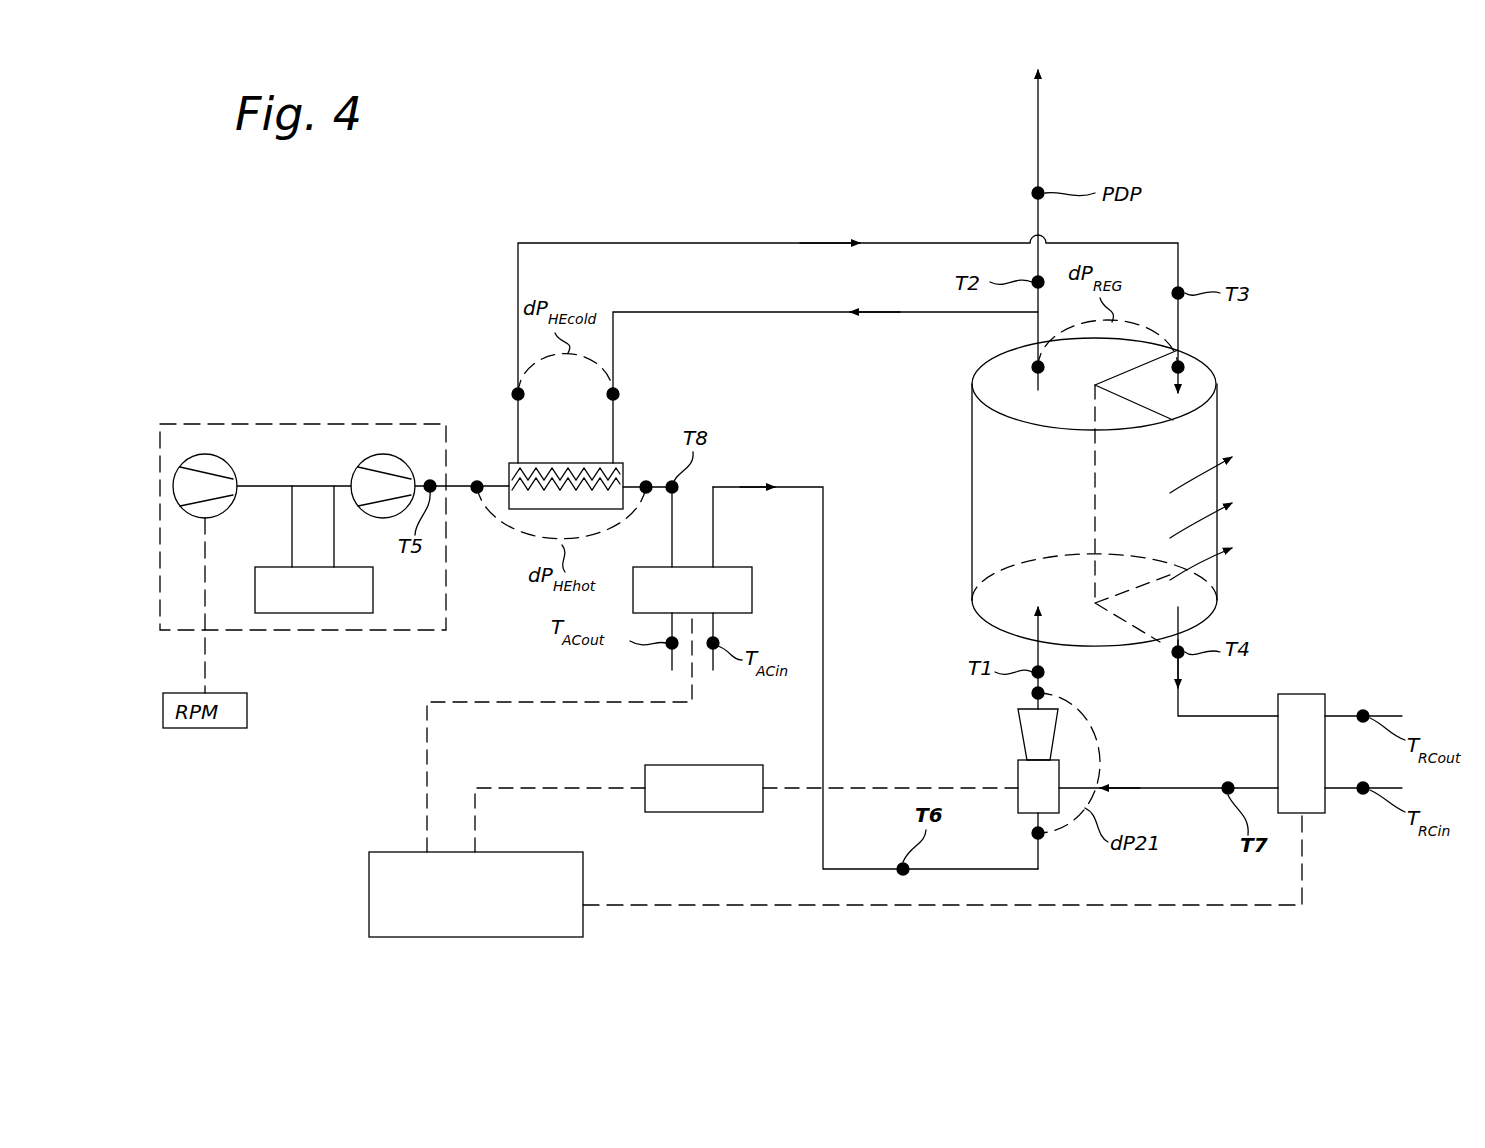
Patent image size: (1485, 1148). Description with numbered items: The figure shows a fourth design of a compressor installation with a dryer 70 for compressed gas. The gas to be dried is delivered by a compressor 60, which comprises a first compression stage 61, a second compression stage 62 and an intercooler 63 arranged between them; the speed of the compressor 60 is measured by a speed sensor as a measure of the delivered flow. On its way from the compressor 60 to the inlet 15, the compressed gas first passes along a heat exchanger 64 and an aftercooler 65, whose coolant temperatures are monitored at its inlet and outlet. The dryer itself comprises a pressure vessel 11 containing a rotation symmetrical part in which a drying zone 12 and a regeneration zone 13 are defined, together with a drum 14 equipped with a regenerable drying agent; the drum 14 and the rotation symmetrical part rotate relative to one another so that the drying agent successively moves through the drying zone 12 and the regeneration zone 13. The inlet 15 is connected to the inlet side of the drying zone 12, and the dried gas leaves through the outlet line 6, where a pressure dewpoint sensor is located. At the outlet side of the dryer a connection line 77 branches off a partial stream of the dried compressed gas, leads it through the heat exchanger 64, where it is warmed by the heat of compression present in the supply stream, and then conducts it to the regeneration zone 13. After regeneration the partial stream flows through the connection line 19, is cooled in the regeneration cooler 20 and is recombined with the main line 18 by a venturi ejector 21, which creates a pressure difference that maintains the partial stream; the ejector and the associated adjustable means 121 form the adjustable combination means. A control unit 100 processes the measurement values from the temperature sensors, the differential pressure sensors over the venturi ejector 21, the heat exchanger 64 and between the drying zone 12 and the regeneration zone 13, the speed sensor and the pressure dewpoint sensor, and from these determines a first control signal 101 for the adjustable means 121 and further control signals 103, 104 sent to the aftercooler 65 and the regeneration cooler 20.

The outlet line 6 is at (1038, 143).
The pressure vessel 11 is at (1250, 225).
The drying zone 12 is at (1003, 487).
The regeneration zone 13 is at (1203, 438).
The drum 14 is at (1215, 368).
The inlet 15 is at (1038, 653).
The main line 18 is at (823, 738).
The connection line 19 is at (1243, 716).
The regeneration cooler 20 is at (1315, 700).
The venturi ejector 21 is at (1025, 778).
The compressor 60 is at (294, 437).
The first compression stage 61 is at (183, 485).
The second compression stage 62 is at (380, 455).
The intercooler 63 is at (275, 613).
The heat exchanger 64 is at (530, 502).
The aftercooler 65 is at (752, 590).
The dryer 70 is at (437, 272).
The connection line 77 is at (740, 243).
The control unit 100 is at (476, 894).
The first control signal 101 is at (560, 788).
The third control signal 103 is at (515, 702).
The third control signal 104 is at (1302, 885).
The adjustable means 121 is at (704, 788).